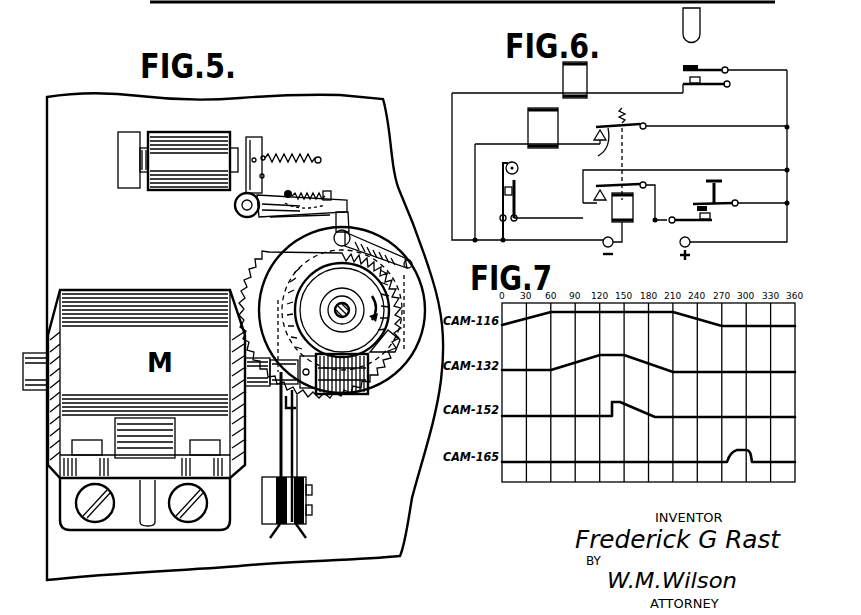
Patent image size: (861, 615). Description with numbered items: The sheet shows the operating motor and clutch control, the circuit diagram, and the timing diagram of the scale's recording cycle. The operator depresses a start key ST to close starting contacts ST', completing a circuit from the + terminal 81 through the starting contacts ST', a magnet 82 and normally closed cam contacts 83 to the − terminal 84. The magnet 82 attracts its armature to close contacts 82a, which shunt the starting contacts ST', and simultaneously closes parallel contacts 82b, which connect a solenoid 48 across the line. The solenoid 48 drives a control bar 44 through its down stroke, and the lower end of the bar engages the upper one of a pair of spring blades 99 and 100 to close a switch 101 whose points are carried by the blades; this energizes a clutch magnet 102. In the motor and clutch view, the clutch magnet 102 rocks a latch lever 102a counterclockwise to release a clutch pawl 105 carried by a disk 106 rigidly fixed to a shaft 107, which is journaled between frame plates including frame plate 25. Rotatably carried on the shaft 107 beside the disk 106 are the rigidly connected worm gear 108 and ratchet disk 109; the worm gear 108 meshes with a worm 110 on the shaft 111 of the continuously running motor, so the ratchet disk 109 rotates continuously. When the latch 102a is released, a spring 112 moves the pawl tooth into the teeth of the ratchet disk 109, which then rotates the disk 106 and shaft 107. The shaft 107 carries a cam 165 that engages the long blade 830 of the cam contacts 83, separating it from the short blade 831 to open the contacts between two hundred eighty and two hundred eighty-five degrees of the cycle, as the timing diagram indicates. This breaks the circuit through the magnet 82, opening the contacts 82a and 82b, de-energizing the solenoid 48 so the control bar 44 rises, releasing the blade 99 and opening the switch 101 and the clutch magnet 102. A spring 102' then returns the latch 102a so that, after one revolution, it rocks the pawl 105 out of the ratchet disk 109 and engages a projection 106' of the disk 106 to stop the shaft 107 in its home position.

In FIG. 5, the frame plate 25 is at (48, 255).
In FIG. 5, the clutch magnet 102 is at (178, 176).
In FIG. 6, the clutch magnet 102 is at (553, 80).
In FIG. 5, the spring 102' is at (298, 148).
In FIG. 5, the latch lever 102a is at (264, 190).
In FIG. 5, the projection of disk 106' is at (292, 191).
In FIG. 5, the clutch pawl 105 is at (358, 243).
In FIG. 5, the cam 165 is at (290, 263).
In FIG. 6, the cam 165 is at (519, 170).
In FIG. 5, the ratchet disk 109 is at (293, 293).
In FIG. 5, the shaft 107 is at (348, 302).
In FIG. 5, the worm gear 108 is at (342, 310).
In FIG. 5, the spring 112 is at (392, 368).
In FIG. 5, the disk 106 is at (387, 344).
In FIG. 5, the worm 110 is at (351, 392).
In FIG. 5, the motor shaft 111 is at (276, 380).
In FIG. 5, the cam contacts 83 is at (292, 405).
In FIG. 6, the cam contacts 83 is at (518, 195).
In FIG. 5, the long blade 830 is at (285, 432).
In FIG. 6, the long blade 830 is at (500, 205).
In FIG. 5, the short blade 831 is at (294, 453).
In FIG. 6, the short blade 831 is at (518, 205).
In FIG. 6, the control bar 44 is at (701, 27).
In FIG. 6, the spring blade 99 is at (708, 70).
In FIG. 6, the switch 101 is at (682, 72).
In FIG. 6, the spring blade 100 is at (710, 88).
In FIG. 6, the solenoid 48 is at (528, 135).
In FIG. 6, the parallel contacts 82b is at (594, 127).
In FIG. 6, the magnet 82 is at (604, 232).
In FIG. 6, the contacts 82a is at (592, 197).
In FIG. 6, the − terminal 84 is at (615, 242).
In FIG. 6, the + terminal 81 is at (691, 242).
In FIG. 6, the start key ST is at (740, 196).
In FIG. 6, the starting contacts ST' is at (715, 221).